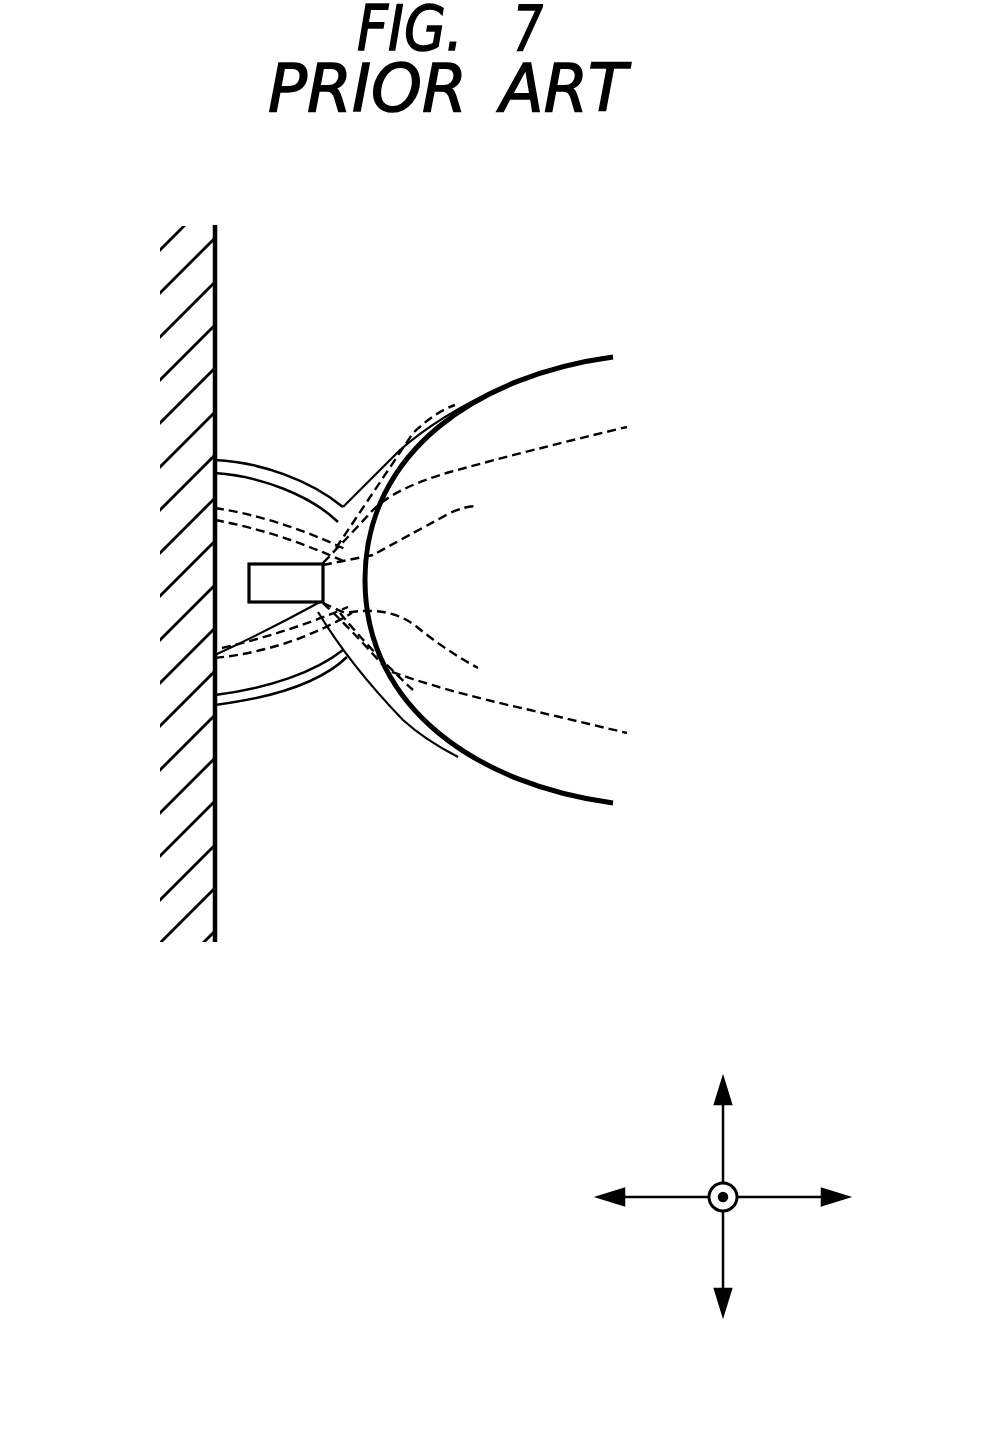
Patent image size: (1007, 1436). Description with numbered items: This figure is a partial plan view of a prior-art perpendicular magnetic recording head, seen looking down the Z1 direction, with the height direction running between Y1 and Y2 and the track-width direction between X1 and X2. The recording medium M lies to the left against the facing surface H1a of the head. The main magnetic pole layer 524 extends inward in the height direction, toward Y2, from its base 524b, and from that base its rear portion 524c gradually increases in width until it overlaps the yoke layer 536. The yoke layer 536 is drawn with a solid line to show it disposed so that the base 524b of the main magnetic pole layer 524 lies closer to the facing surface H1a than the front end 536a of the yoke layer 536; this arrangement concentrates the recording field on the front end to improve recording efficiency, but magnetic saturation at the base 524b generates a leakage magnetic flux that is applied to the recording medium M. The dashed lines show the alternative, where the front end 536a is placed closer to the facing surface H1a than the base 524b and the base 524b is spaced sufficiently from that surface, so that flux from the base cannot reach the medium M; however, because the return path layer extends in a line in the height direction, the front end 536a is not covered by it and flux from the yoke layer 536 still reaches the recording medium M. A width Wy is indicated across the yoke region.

The main magnetic pole layer 524 is at (268, 563).
The base 524b is at (478, 506).
The rear portion 524c is at (415, 672).
The yoke layer 536 is at (557, 795).
The front end of the yoke layer 536a is at (250, 602).
The facing surface H1a is at (249, 586).
The recording medium M is at (215, 905).
The width in Y direction Wy is at (479, 581).
The X1 direction X1 is at (722, 1057).
The X2 direction X2 is at (723, 1341).
The Y1 direction Y1 is at (573, 1201).
The Y2 direction Y2 is at (872, 1201).
The Z1 direction Z1 is at (770, 1177).